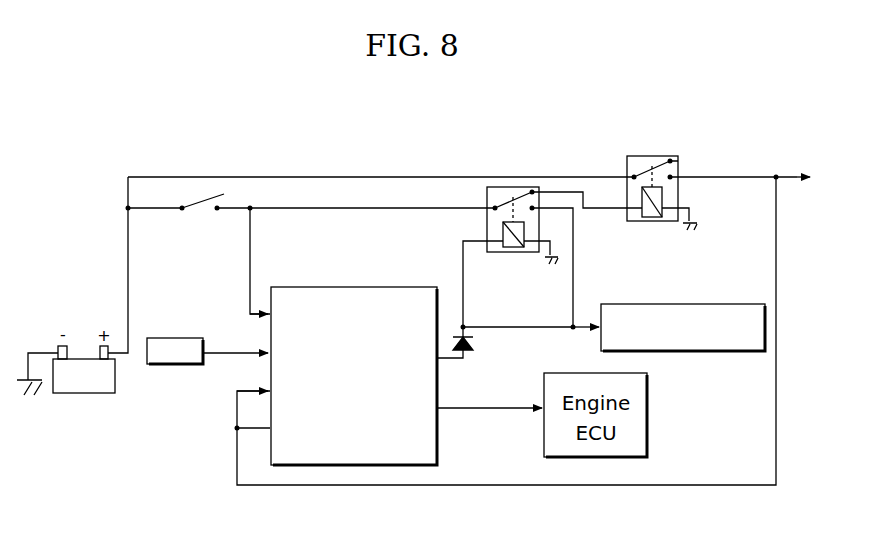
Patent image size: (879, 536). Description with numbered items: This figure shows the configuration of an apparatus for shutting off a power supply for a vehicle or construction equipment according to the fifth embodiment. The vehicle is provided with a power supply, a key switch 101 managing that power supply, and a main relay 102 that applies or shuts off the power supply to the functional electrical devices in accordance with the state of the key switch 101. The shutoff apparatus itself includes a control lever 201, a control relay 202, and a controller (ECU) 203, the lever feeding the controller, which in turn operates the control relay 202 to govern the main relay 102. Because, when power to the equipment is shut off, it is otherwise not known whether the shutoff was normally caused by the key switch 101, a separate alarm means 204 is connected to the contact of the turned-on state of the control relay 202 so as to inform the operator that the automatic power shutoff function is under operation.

The key switch 101 is at (201, 201).
The main relay 102 is at (652, 156).
The control lever 201 is at (175, 365).
The control relay 202 is at (515, 187).
The controller (ECU) 203 is at (355, 287).
The alarm means 204 is at (675, 351).